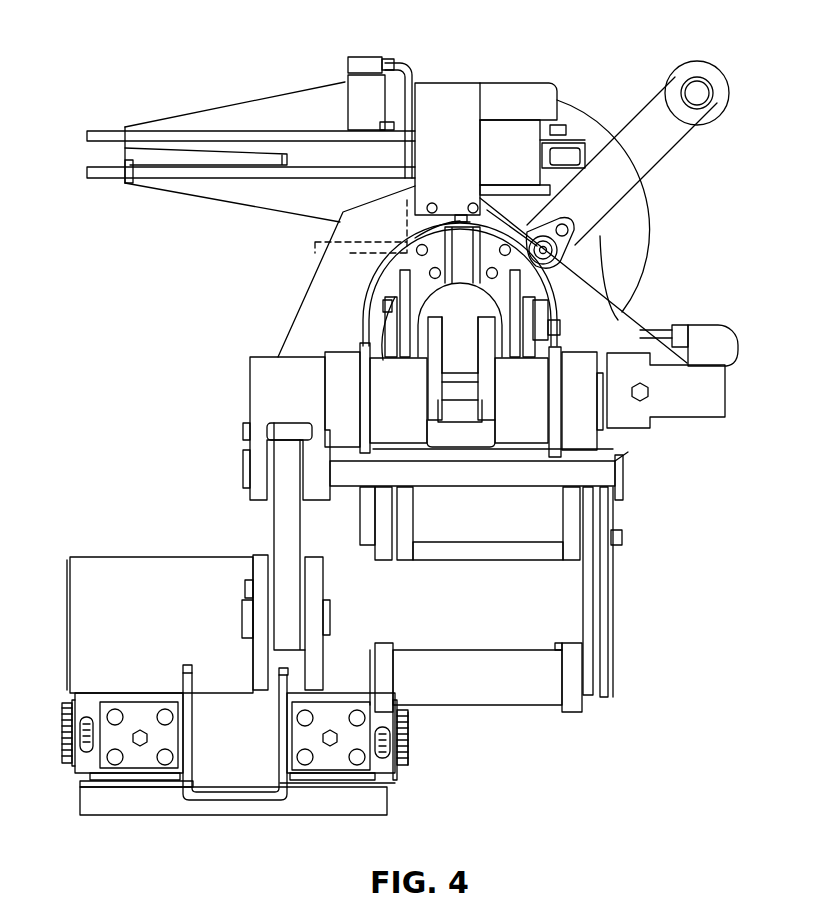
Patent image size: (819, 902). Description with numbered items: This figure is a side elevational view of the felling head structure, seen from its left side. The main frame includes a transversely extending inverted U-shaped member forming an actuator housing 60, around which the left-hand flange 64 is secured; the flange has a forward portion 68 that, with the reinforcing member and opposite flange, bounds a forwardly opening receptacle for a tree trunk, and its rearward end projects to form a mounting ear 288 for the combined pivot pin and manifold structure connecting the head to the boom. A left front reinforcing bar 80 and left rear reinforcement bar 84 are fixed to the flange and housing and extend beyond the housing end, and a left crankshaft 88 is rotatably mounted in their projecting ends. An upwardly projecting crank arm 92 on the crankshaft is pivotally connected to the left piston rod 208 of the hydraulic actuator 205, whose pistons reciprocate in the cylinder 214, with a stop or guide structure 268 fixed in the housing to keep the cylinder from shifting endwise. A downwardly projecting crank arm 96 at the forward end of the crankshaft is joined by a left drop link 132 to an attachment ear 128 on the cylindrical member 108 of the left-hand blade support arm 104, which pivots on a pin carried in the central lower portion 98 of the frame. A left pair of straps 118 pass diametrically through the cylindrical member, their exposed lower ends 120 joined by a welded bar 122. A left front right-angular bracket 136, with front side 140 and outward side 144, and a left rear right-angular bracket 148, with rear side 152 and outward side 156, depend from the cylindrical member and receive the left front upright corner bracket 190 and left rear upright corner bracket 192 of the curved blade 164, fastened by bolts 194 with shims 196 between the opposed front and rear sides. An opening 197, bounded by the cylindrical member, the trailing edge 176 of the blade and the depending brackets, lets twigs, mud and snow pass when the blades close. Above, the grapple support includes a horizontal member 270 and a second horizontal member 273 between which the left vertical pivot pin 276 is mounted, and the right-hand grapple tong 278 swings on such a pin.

The actuator housing 60 is at (368, 282).
The left-hand flange 64 is at (437, 293).
The forward portion 68 is at (292, 340).
The left front reinforcing bar 80 is at (333, 391).
The left rear reinforcement bar 84 is at (549, 402).
The left crankshaft 88 is at (250, 375).
The upwardly projecting crank arm 92 is at (435, 364).
The downwardly projecting crank arm 96 is at (262, 502).
The central lower portion 98 is at (503, 546).
The left-hand blade support arm 104 is at (167, 605).
The cylindrical member 108 is at (130, 538).
The left pair of straps 118 is at (386, 552).
The exposed lower ends 120 is at (383, 643).
The bar 122 is at (477, 656).
The attachment ear 128 is at (318, 590).
The left drop link 132 is at (300, 528).
The left front right-angular bracket 136 is at (70, 777).
The front side 140 is at (75, 698).
The outward side 144 is at (86, 692).
The left rear right-angular bracket 148 is at (404, 776).
The rear side 152 is at (408, 748).
The outward side 156 is at (397, 780).
The blade 164 is at (146, 815).
The trailing edge 176 is at (115, 786).
The left front upright corner bracket 190 is at (90, 777).
The left rear upright corner bracket 192 is at (290, 777).
The bolts 194 is at (165, 709).
The shims 196 is at (86, 736).
The opening 197 is at (235, 732).
The hydraulic actuator 205 is at (447, 152).
The left piston rod 208 is at (474, 356).
The cylinder 214 is at (463, 320).
The left stop or guide structure 268 is at (416, 236).
The horizontal member 270 is at (322, 243).
The second horizontal member 273 is at (396, 67).
The left vertical pivot pin 276 is at (371, 57).
The right-hand grapple tong 278 is at (92, 170).
The mounting ear 288 is at (665, 428).